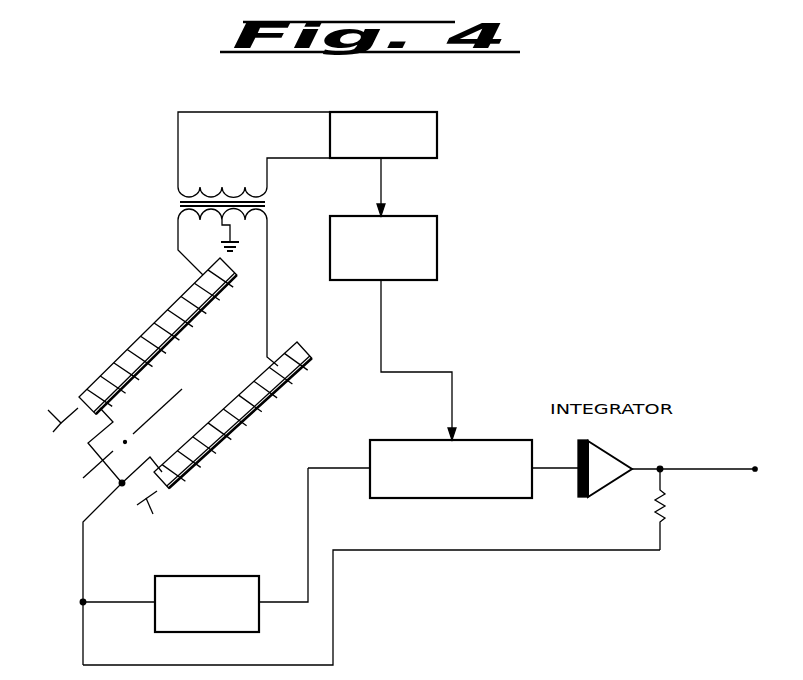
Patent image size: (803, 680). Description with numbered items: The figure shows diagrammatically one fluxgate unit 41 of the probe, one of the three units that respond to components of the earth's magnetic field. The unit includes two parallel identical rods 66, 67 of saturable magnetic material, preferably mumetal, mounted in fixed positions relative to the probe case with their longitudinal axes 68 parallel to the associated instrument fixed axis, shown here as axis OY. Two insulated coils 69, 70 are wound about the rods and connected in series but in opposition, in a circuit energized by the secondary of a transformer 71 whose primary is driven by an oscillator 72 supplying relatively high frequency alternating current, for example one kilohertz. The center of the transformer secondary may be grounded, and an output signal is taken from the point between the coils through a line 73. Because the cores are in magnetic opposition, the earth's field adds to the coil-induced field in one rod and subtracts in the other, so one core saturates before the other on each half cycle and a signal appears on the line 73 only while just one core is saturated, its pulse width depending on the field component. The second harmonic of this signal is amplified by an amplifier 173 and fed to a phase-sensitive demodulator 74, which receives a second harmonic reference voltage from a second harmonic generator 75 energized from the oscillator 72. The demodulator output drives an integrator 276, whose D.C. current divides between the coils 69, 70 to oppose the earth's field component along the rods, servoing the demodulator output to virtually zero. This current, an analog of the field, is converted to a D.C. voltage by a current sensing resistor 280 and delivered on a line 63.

The fluxgate unit 41 is at (143, 289).
The line 63 is at (705, 468).
The rod 66 is at (246, 415).
The rod 67 is at (149, 336).
The longitudinal axes 68 is at (96, 466).
The insulated coil 69 is at (225, 432).
The insulated coil 70 is at (110, 372).
The transformer 71 is at (268, 197).
The oscillator 72 is at (437, 155).
The line 73 is at (115, 601).
The phase-sensitive demodulator 74 is at (462, 498).
The second harmonic generator 75 is at (437, 243).
The amplifier 173 is at (257, 577).
The integrator 276 is at (602, 457).
The resistor 280 is at (668, 512).